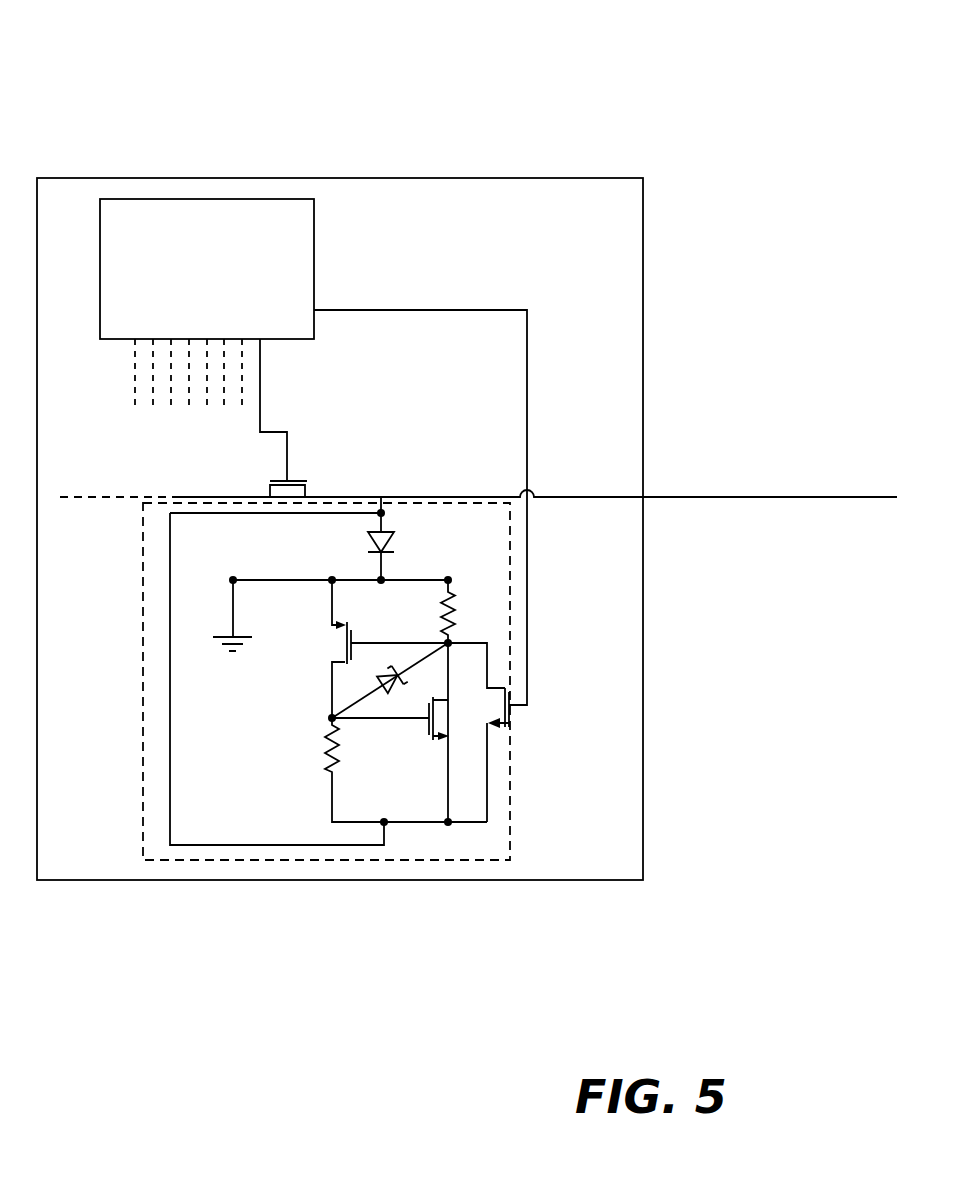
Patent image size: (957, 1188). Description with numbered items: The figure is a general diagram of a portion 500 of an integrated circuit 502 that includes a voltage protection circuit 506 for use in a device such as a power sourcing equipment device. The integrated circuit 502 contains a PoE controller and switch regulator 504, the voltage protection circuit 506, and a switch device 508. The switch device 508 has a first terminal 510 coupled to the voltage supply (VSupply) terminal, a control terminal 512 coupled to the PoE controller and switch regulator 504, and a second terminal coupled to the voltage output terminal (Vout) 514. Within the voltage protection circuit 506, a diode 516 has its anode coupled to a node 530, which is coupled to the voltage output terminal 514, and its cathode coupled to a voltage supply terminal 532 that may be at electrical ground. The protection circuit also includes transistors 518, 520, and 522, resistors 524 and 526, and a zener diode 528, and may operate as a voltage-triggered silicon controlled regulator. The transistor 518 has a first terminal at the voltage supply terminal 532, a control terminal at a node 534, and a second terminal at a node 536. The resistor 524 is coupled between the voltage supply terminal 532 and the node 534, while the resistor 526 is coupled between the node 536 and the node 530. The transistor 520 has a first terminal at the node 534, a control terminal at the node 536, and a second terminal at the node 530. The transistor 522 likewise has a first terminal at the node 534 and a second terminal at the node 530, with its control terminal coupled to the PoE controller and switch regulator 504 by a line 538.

The portion of an integrated circuit 500 is at (646, 108).
The integrated circuit 502 is at (358, 178).
The PoE controller and switch regulator 504 is at (314, 255).
The voltage protection circuit 506 is at (143, 612).
The switch device 508 is at (320, 464).
The first terminal 510 is at (226, 497).
The control terminal 512 is at (287, 432).
The voltage output terminal (Vout) 514 is at (730, 497).
The diode 516 is at (395, 541).
The transistor 518 is at (320, 643).
The transistor 520 is at (416, 731).
The transistor 522 is at (532, 722).
The resistor 524 is at (455, 597).
The resistor 526 is at (325, 748).
The zener diode 528 is at (388, 666).
The node 530 is at (381, 503).
The voltage supply terminal 532 is at (278, 580).
The node 534 is at (455, 643).
The node 536 is at (328, 718).
The line 538 is at (432, 310).